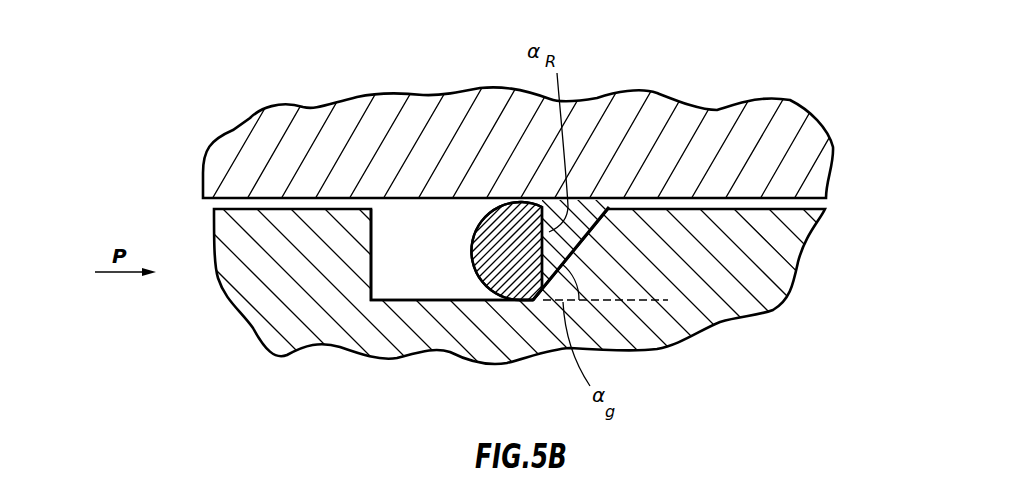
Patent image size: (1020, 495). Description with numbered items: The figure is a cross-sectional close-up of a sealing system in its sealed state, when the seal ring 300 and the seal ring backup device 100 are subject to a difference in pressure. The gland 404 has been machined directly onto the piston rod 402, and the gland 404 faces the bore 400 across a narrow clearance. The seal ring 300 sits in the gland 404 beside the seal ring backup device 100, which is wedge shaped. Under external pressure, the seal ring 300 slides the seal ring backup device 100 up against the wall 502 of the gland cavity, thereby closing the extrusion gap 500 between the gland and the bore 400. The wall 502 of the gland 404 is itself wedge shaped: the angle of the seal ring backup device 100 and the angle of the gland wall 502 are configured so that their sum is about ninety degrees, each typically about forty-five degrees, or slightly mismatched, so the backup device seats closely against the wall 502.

The seal ring backup device 100 is at (545, 226).
The seal ring 300 is at (470, 243).
The bore 400 is at (757, 120).
The piston rod 402 is at (790, 230).
The gland 404 is at (430, 285).
The extrusion gap 500 is at (622, 207).
The wall 502 is at (543, 232).